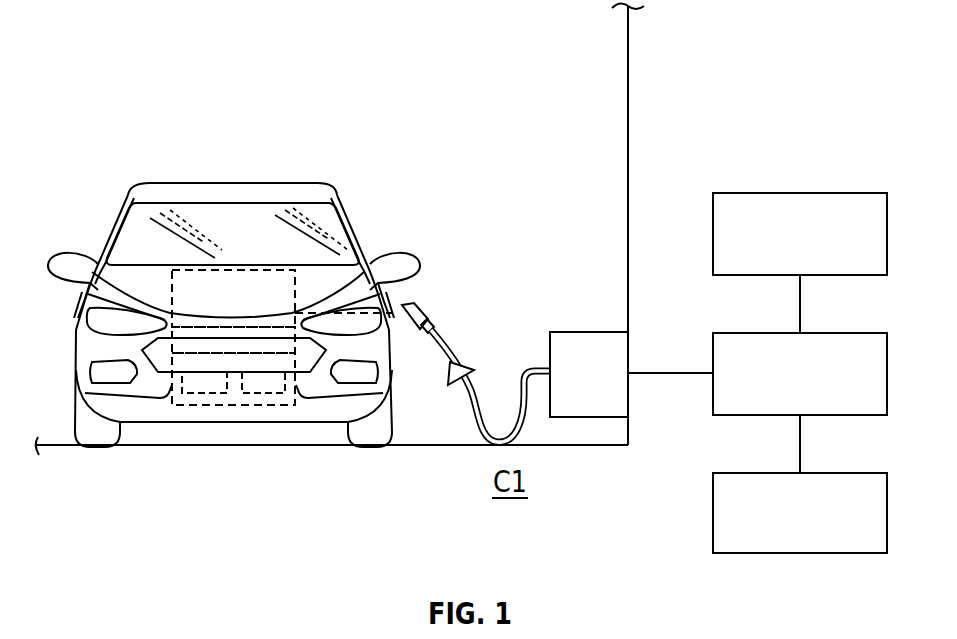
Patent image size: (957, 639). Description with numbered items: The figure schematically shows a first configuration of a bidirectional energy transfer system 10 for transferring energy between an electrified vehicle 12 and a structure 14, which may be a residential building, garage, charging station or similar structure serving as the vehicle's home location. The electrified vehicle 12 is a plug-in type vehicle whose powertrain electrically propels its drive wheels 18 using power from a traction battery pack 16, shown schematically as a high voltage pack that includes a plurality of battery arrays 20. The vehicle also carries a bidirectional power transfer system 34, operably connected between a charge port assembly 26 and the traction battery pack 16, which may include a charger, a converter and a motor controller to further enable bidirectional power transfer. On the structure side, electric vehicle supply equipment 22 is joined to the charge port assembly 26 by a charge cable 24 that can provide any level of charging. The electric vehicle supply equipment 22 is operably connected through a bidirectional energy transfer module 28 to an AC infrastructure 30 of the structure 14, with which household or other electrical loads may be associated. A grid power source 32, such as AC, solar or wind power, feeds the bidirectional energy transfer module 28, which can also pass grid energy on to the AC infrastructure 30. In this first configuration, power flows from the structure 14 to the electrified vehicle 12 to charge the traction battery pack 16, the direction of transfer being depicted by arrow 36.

The bidirectional energy transfer system 10 is at (172, 34).
The electrified vehicle 12 is at (248, 148).
The structure 14 is at (627, 119).
The traction battery pack 16 is at (217, 406).
The drive wheels 18 is at (96, 438).
The battery arrays 20 is at (187, 394).
The electric vehicle supply equipment 22 is at (581, 331).
The charge cable 24 is at (483, 425).
The charge port assembly 26 is at (411, 293).
The bidirectional energy transfer module 28 is at (770, 333).
The AC infrastructure 30 is at (770, 193).
The grid power source 32 is at (770, 473).
The bidirectional power transfer system 34 is at (225, 270).
The arrow 36 is at (460, 362).